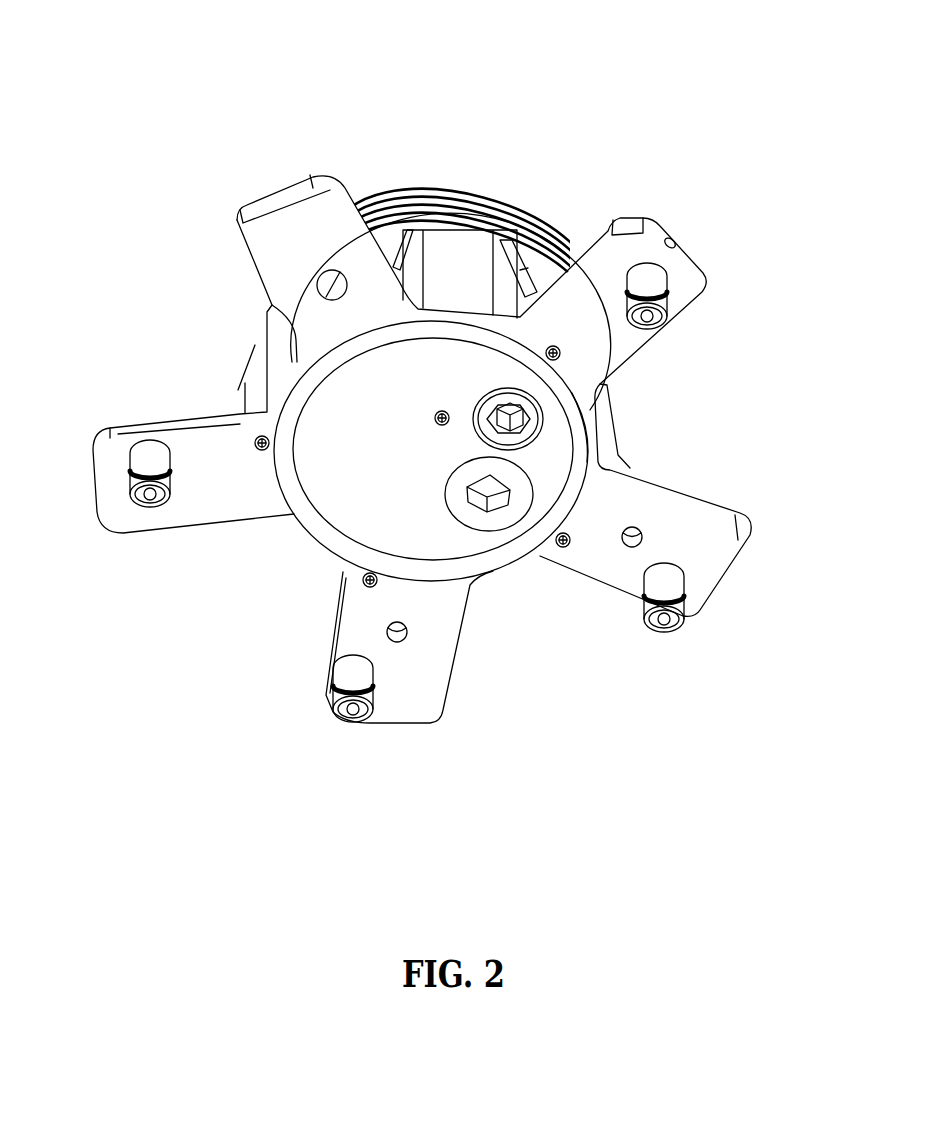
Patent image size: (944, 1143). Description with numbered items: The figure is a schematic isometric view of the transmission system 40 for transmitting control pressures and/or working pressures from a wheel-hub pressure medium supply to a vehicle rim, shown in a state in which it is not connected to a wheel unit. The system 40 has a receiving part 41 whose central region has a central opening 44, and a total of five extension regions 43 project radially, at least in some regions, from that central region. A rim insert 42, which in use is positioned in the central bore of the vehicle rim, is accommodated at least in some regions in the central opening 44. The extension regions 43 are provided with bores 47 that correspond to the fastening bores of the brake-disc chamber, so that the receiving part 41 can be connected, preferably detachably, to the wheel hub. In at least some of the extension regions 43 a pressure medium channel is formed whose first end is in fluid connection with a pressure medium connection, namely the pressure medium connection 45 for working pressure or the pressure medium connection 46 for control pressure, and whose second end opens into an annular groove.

The transmission system 40 is at (410, 157).
The receiving part 41 is at (530, 337).
The rim insert 42 is at (393, 381).
The extension region 43 is at (199, 184).
The central opening 44 is at (692, 390).
The pressure medium connection for working pressure 45 is at (677, 587).
The pressure medium connection for control pressure 46 is at (559, 116).
The bore 47 is at (211, 232).